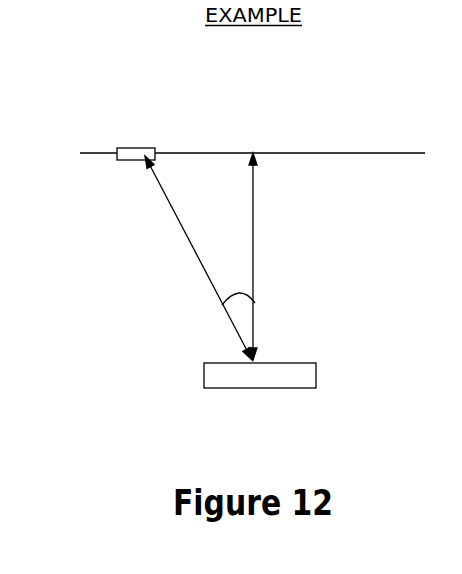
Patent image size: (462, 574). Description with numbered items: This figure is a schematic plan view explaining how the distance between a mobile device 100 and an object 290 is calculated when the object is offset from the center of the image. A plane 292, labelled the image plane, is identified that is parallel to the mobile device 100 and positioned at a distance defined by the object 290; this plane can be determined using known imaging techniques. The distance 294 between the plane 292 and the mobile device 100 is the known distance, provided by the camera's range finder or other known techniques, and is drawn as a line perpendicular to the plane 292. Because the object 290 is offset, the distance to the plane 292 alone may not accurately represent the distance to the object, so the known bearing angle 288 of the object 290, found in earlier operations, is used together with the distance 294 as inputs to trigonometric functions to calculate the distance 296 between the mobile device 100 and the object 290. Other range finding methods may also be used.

The mobile device 100 is at (303, 380).
The bearing angle 288 is at (240, 289).
The object 290 is at (123, 148).
The plane 292 is at (370, 152).
The distance 294 is at (253, 198).
The distance 296 is at (158, 185).